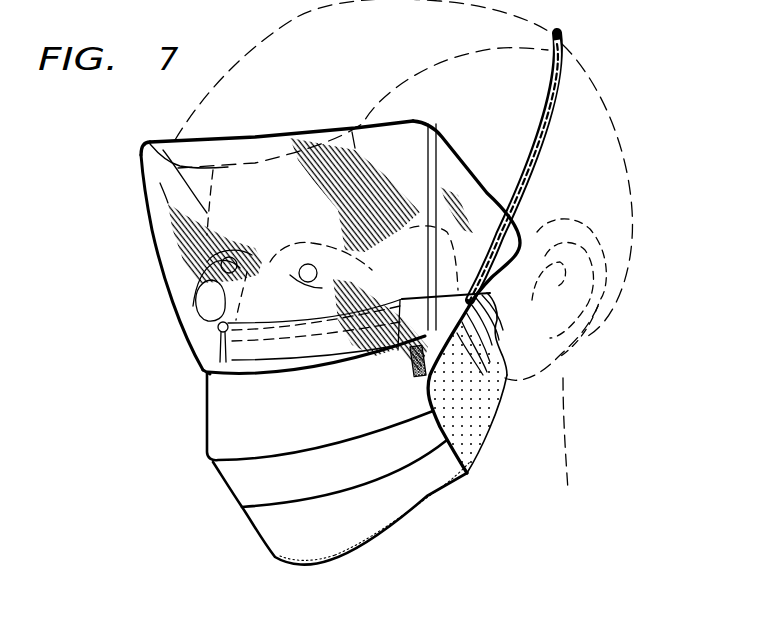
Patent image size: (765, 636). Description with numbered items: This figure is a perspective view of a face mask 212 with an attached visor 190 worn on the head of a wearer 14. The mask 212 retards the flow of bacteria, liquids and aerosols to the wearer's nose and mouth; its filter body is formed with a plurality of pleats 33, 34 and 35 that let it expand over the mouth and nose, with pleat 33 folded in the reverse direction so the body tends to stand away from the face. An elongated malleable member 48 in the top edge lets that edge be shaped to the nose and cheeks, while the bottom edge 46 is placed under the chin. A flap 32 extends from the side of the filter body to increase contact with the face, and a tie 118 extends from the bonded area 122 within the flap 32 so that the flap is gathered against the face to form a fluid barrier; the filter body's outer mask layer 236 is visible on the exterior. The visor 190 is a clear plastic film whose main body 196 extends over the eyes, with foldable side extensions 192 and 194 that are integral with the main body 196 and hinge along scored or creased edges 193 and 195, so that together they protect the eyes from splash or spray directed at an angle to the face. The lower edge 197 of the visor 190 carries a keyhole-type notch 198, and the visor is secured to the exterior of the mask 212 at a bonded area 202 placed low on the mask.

The wearer 14 is at (590, 86).
The tie strip 118 is at (560, 37).
The visor 190 is at (296, 278).
The foldable side extension 192 is at (160, 158).
The edge 193 is at (144, 186).
The foldable side extension 194 is at (490, 196).
The edge 195 is at (436, 147).
The main body 196 is at (252, 136).
The lower edge 197 is at (292, 355).
The notch 198 is at (200, 309).
The malleable member 48 is at (378, 319).
The bonded area 202 is at (420, 378).
The bonded area 122 is at (497, 388).
The mask 212 is at (326, 466).
The pleat 33 is at (205, 374).
The pleat 34 is at (292, 458).
The pleat 35 is at (268, 510).
The bottom edge 46 is at (378, 535).
The outer mask layer 236 is at (206, 412).
The flap 32 is at (472, 413).